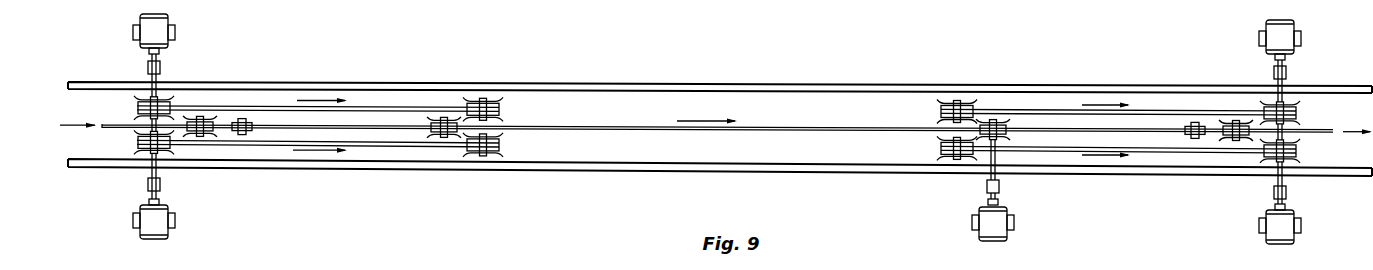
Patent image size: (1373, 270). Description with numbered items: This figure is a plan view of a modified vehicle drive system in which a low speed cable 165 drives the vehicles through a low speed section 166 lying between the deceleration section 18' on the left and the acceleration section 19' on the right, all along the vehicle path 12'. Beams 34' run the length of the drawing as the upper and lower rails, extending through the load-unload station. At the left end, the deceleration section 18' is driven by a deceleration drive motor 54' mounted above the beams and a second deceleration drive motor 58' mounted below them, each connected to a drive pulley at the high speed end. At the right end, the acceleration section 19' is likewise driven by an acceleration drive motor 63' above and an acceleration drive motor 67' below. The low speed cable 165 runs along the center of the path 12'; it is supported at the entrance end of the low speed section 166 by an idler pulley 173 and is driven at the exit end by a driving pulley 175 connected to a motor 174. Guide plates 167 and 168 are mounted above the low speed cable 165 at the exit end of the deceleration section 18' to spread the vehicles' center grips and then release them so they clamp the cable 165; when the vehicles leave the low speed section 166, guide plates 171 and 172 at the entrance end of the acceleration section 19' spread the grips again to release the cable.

The path 12' is at (1349, 117).
The deceleration section 18' is at (318, 149).
The acceleration section 19' is at (1118, 155).
The beams 34' is at (720, 131).
The deceleration drive motor 54' is at (177, 48).
The deceleration drive motor 58' is at (177, 201).
The acceleration drive motor 63' is at (1303, 56).
The acceleration drive motor 67' is at (1305, 209).
The low speed cable 165 is at (786, 128).
The low speed section 166 is at (850, 153).
The guide plate 167 is at (432, 126).
The guide plate 168 is at (431, 135).
The guide plate 171 is at (1020, 100).
The guide plate 172 is at (1000, 138).
The idler pulley 173 is at (440, 134).
The motor 174 is at (977, 237).
The driving pulley 175 is at (995, 141).